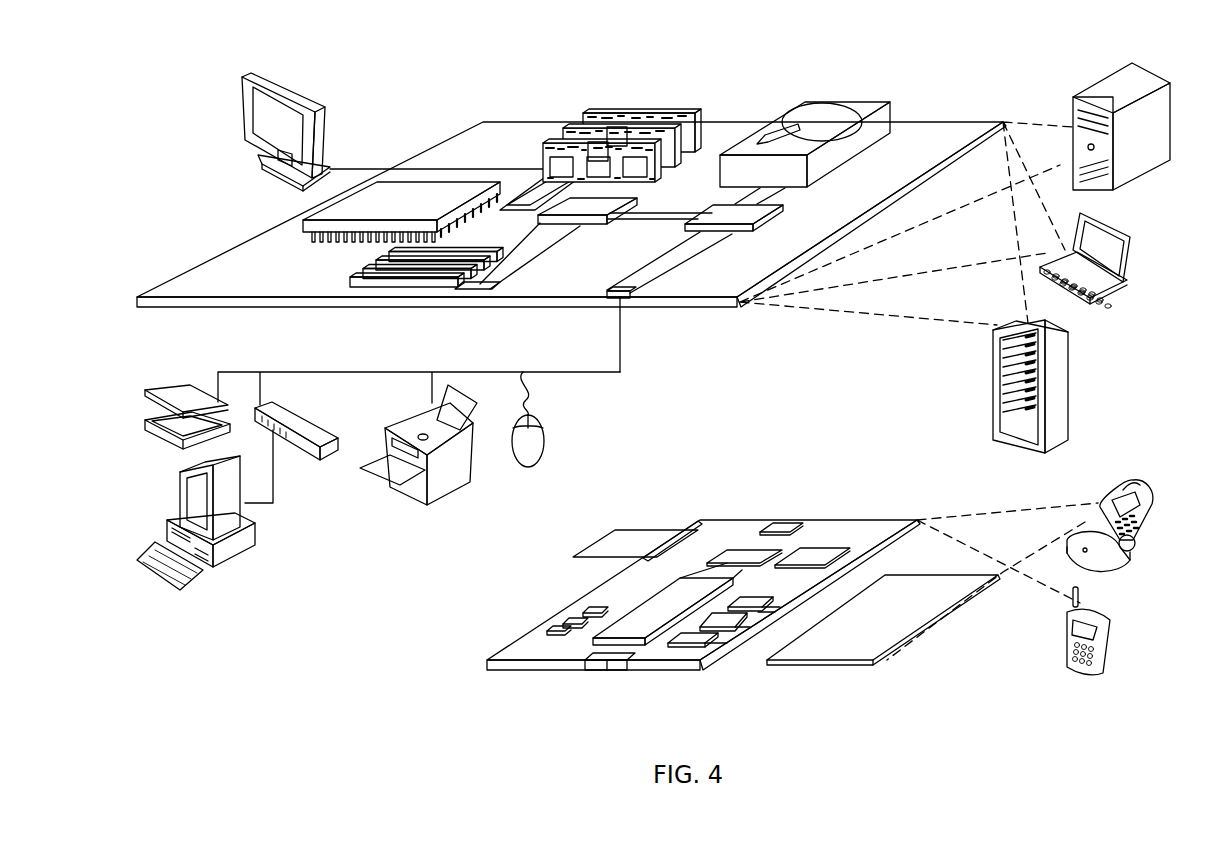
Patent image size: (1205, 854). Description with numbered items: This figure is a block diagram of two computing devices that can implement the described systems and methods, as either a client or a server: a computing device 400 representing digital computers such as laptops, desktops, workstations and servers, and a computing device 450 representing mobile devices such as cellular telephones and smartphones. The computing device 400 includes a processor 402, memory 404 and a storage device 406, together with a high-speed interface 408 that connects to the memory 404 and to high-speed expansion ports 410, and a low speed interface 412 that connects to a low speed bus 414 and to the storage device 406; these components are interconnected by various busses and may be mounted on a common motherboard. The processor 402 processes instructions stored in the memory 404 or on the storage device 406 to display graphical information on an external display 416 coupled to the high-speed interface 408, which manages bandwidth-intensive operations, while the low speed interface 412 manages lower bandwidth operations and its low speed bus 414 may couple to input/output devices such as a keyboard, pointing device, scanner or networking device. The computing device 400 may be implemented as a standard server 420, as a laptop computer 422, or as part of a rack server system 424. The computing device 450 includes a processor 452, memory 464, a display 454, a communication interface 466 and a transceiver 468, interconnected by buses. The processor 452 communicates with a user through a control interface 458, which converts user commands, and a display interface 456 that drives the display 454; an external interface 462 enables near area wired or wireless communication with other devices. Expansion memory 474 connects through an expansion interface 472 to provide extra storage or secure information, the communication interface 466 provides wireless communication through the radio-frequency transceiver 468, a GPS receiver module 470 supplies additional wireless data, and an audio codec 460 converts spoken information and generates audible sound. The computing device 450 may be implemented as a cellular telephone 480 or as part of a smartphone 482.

The computing device 400 is at (413, 92).
The processor 402 is at (310, 222).
The memory 404 is at (590, 124).
The storage device 406 is at (805, 102).
The high-speed interface 408 is at (565, 208).
The high-speed expansion ports 410 is at (363, 272).
The low speed interface 412 is at (718, 212).
The low speed bus 414 is at (635, 299).
The display 416 is at (252, 78).
The standard server 420 is at (1073, 110).
The laptop computer 422 is at (1130, 230).
The rack server system 424 is at (993, 405).
The computing device 450 is at (458, 674).
The processor 452 is at (642, 636).
The display 454 is at (848, 650).
The display interface 456 is at (705, 650).
The control interface 458 is at (728, 625).
The audio codec 460 is at (752, 604).
The external interface 462 is at (610, 670).
The memory 464 is at (575, 624).
The communication interface 466 is at (743, 556).
The transceiver 468 is at (814, 555).
The GPS receiver module 470 is at (788, 527).
The expansion interface 472 is at (667, 531).
The expansion memory 474 is at (605, 530).
The cellular telephone 480 is at (1113, 485).
The smartphone 482 is at (1065, 637).